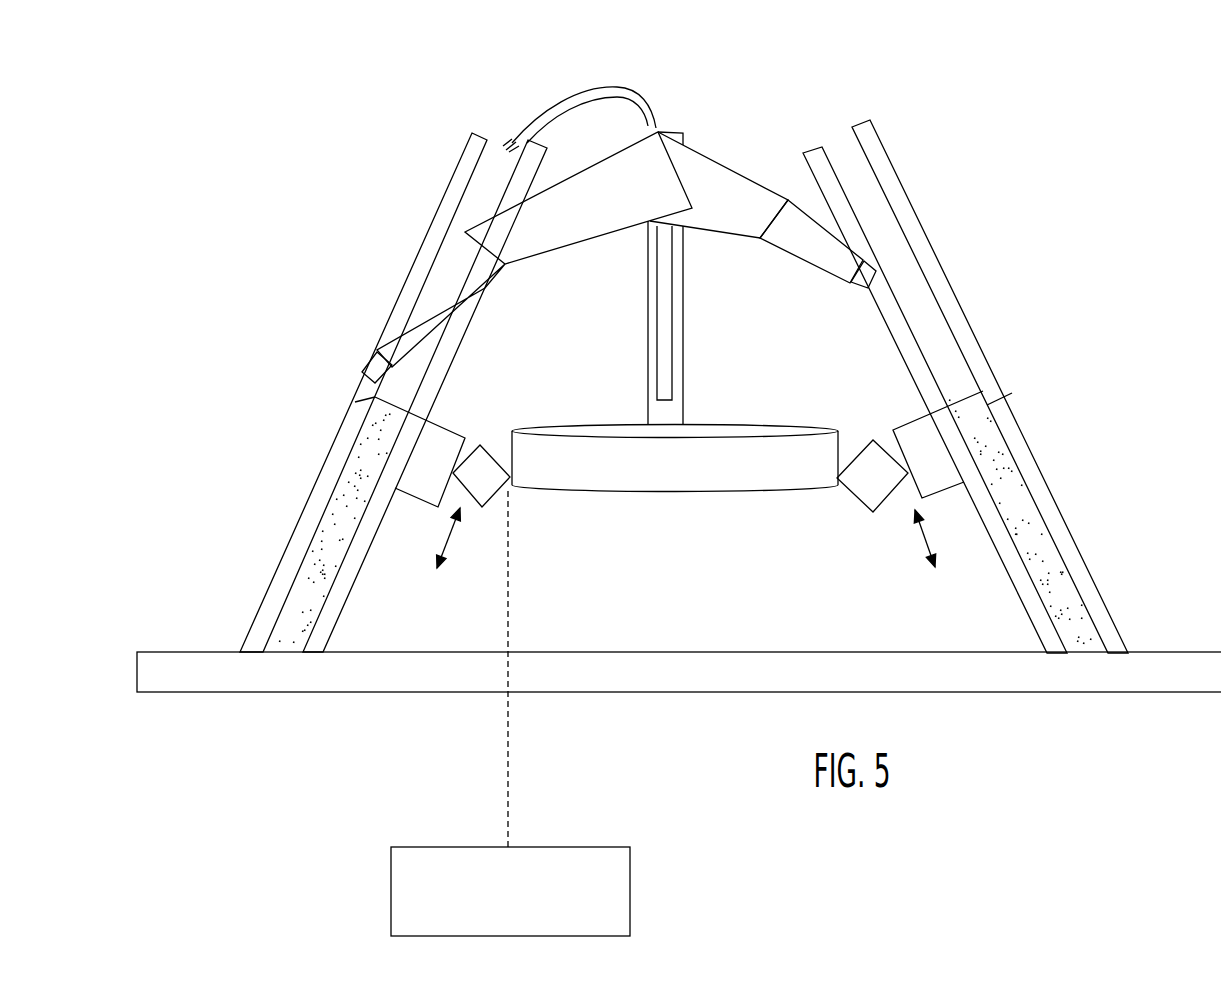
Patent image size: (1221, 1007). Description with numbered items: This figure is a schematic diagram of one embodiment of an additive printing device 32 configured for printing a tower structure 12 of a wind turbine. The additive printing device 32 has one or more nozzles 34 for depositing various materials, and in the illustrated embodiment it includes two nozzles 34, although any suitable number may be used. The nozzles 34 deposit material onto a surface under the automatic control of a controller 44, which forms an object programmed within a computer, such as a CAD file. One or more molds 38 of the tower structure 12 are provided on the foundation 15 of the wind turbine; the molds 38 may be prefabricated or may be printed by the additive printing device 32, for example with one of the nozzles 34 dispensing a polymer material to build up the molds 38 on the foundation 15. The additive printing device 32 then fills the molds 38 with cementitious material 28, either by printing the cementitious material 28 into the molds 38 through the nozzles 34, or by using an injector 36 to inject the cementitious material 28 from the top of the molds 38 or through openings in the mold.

The tower structure 12 is at (1062, 555).
The foundation 15 is at (198, 652).
The cementitious material 28 is at (1080, 637).
The additive printing device 32 is at (781, 122).
The nozzles 34 is at (448, 282).
The injector 36 is at (593, 92).
The molds 38 is at (412, 295).
The controller 44 is at (388, 892).